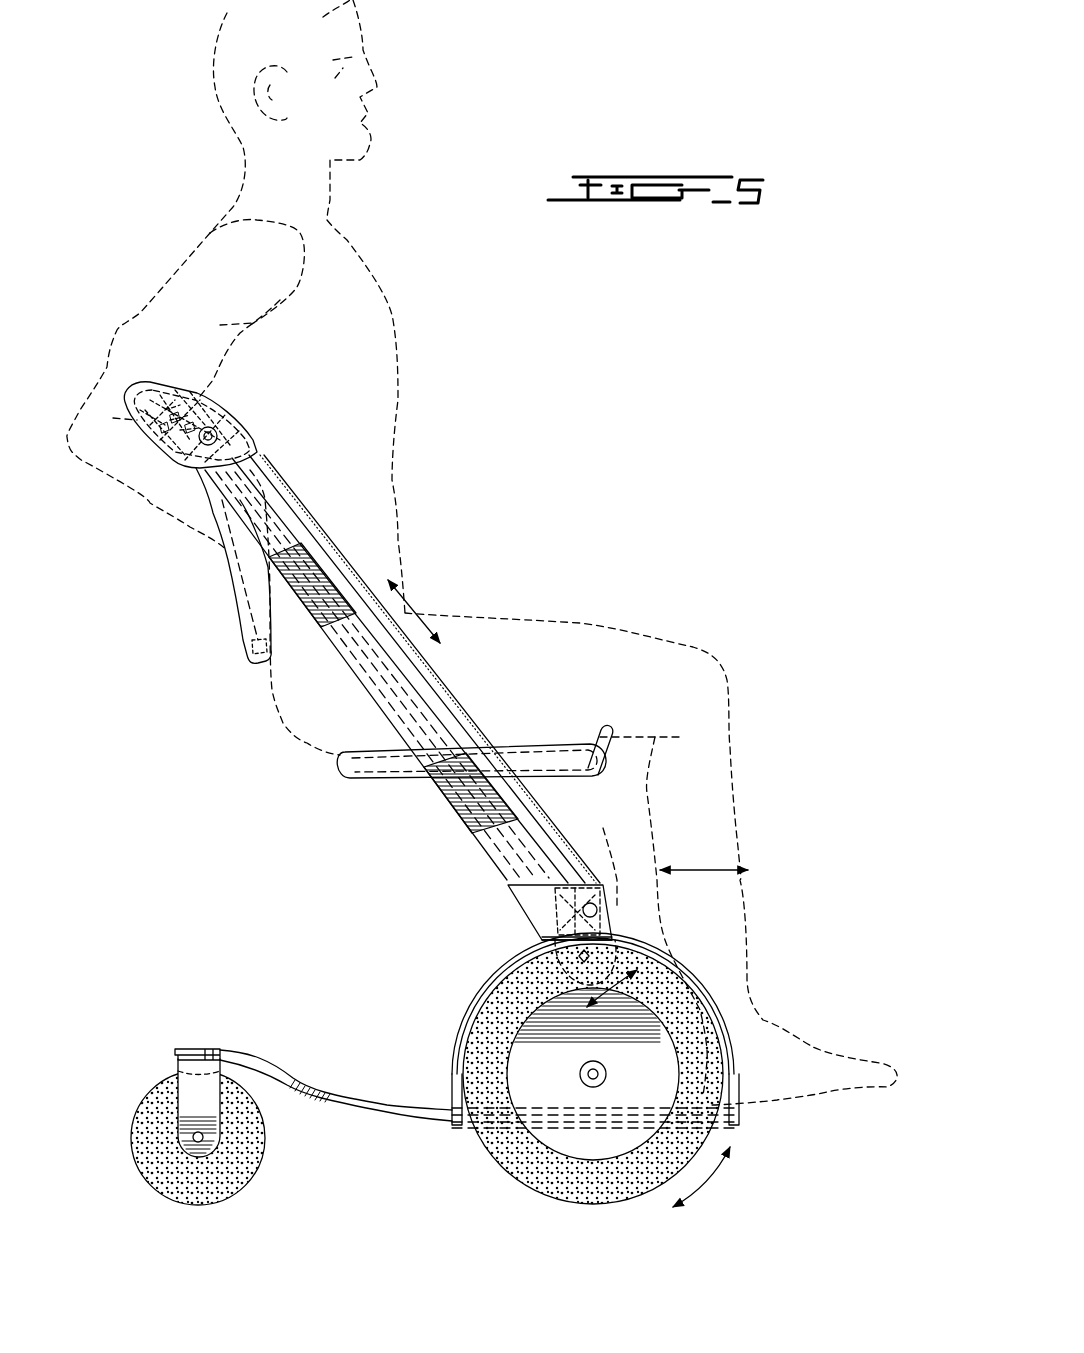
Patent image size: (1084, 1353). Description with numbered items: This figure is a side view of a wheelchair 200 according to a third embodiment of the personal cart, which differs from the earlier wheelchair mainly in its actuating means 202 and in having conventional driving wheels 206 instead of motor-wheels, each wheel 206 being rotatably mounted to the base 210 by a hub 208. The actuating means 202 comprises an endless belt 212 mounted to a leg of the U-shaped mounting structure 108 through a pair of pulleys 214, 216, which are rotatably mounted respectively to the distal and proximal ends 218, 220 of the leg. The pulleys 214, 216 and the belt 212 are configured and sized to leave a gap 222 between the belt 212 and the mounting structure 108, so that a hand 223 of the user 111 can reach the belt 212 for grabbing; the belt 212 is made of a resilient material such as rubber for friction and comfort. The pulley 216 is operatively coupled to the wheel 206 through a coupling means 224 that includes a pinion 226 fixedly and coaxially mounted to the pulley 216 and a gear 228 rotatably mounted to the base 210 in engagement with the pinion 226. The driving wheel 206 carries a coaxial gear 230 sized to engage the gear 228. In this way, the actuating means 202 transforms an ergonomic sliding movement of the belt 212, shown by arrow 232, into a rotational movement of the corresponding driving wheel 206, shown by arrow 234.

The wheelchair 200 is at (464, 185).
The user 111 is at (380, 405).
The pulley 214 is at (163, 382).
The distal end 218 is at (160, 440).
The hand 223 is at (343, 562).
The arrow 232 is at (407, 613).
The endless belt 212 is at (443, 677).
The gap 222 is at (262, 645).
The actuating means 202 is at (350, 668).
The U-shaped mounting structure 108 is at (450, 787).
The pulley 216 is at (615, 857).
The base 210 is at (700, 985).
The pinion 226 is at (615, 927).
The coupling means 224 is at (622, 912).
The gear 228 is at (628, 928).
The proximal end 220 is at (543, 938).
The hub 208 is at (580, 1072).
The gear 230 is at (653, 1077).
The arrow 234 is at (707, 1180).
The driving wheel 206 is at (517, 1188).